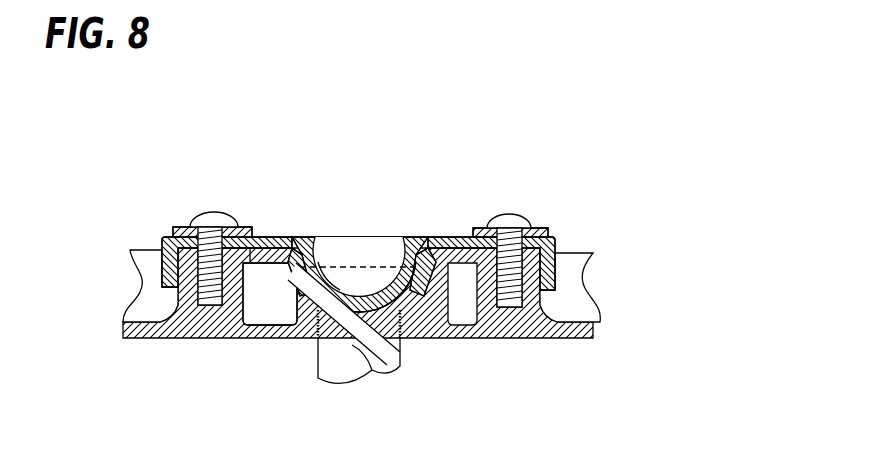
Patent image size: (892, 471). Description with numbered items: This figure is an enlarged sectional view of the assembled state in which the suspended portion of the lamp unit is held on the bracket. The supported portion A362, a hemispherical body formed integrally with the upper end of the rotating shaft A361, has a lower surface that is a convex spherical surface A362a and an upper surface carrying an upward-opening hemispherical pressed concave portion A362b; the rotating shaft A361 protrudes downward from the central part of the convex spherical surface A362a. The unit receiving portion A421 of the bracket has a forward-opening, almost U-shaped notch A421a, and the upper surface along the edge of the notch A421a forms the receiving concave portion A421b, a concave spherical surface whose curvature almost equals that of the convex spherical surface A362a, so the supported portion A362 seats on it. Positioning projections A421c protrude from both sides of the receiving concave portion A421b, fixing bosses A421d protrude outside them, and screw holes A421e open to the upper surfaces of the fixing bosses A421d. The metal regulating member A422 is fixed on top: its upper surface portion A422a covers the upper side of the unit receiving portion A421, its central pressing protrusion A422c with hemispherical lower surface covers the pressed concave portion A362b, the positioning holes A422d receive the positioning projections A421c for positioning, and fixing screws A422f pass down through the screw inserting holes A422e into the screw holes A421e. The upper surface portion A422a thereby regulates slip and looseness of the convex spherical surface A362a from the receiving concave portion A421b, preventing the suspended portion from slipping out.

The unit receiving portion A421 is at (487, 330).
The notch A421a is at (352, 335).
The receiving concave portion A421b is at (270, 322).
The positioning projection A421c is at (263, 236).
The fixing boss A421d is at (572, 262).
The screw hole A421e is at (200, 327).
The regulating member A422 is at (437, 245).
The upper surface portion A422a is at (302, 268).
The pressing protrusion A422c is at (368, 332).
The positioning hole A422d is at (451, 237).
The screw inserting hole A422e is at (512, 245).
The fixing screw A422f is at (212, 214).
The rotating shaft A361 is at (344, 335).
The supported portion A362 is at (418, 267).
The convex spherical surface A362a is at (438, 318).
The pressed concave portion A362b is at (348, 250).